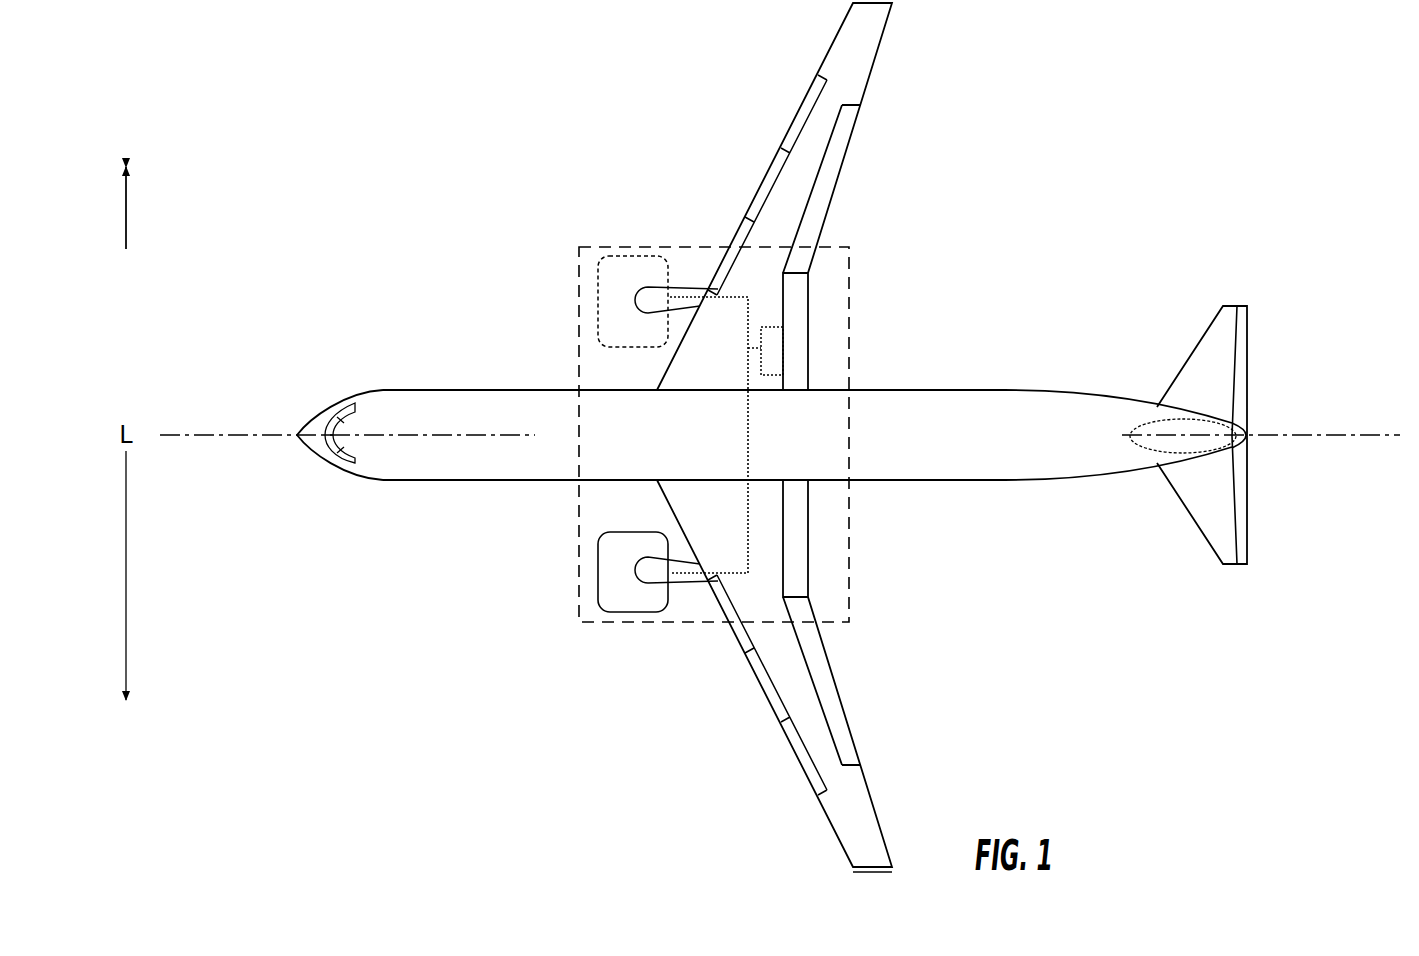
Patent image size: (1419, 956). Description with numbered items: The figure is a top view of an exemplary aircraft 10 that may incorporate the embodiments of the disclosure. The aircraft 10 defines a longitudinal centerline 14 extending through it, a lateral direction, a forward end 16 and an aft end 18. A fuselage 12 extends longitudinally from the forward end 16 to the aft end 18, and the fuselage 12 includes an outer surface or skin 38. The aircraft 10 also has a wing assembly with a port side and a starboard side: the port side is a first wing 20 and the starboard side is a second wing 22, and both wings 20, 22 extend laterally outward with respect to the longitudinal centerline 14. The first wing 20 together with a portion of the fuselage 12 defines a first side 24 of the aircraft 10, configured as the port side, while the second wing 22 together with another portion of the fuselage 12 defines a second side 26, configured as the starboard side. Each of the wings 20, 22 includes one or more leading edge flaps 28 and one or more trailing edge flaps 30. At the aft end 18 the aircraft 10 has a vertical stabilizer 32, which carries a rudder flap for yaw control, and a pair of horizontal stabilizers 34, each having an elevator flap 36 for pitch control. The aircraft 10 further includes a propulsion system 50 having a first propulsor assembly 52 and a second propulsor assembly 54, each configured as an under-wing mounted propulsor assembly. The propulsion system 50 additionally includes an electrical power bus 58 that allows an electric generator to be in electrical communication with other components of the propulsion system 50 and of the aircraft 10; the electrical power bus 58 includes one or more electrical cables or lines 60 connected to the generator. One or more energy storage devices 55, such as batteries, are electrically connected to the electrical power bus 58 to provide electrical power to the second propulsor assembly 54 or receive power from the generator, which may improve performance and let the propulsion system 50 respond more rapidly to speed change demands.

The aircraft 10 is at (1032, 118).
The fuselage 12 is at (756, 478).
The longitudinal centerline 14 is at (225, 437).
The forward end 16 is at (290, 485).
The aft end 18 is at (1220, 440).
The first wing 20 is at (771, 676).
The second wing 22 is at (860, 52).
The first side 24 is at (634, 654).
The second side 26 is at (723, 446).
The leading edge flap 28 is at (768, 692).
The trailing edge flap 30 is at (843, 705).
The vertical stabilizer 32 is at (1250, 446).
The horizontal stabilizer 34 is at (1208, 334).
The elevator flap 36 is at (1233, 352).
The outer surface or skin 38 is at (977, 442).
The propulsion system 50 is at (818, 405).
The first propulsor assembly 52 is at (623, 586).
The second propulsor assembly 54 is at (703, 278).
The energy storage device 55 is at (785, 362).
The electrical power bus 58 is at (763, 317).
The electrical cables or lines 60 is at (750, 440).